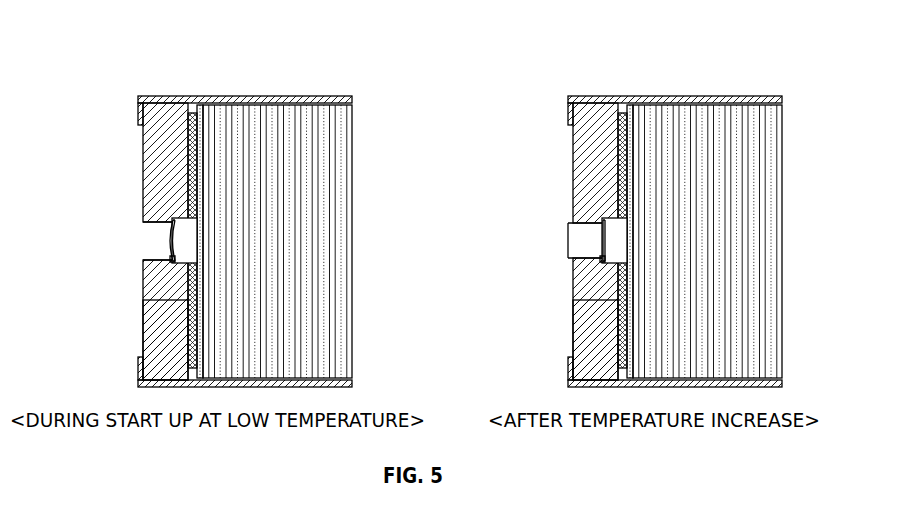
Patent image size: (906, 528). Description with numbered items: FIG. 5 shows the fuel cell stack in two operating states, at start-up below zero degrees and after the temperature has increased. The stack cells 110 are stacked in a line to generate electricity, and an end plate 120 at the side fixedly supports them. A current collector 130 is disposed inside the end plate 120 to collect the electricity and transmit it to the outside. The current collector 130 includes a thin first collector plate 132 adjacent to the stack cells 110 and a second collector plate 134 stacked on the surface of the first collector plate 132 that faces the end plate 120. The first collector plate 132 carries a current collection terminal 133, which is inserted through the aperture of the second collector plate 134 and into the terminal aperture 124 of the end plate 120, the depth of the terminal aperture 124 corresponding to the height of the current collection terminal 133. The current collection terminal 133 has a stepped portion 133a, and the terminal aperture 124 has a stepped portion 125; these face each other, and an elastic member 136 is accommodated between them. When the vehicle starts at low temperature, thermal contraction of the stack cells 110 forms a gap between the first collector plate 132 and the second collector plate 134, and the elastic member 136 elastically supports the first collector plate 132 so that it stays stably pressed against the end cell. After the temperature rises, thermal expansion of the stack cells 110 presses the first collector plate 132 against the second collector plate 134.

The stack cells 110 is at (308, 118).
The end plate 120 is at (153, 156).
The terminal aperture 124 is at (142, 228).
The stepped portion 125 is at (172, 287).
The current collector 130 is at (405, 196).
The first collector plate 132 is at (200, 125).
The current collection terminal 133 is at (147, 247).
The stepped portion 133a is at (172, 223).
The second collector plate 134 is at (189, 112).
The elastic member 136 is at (170, 258).